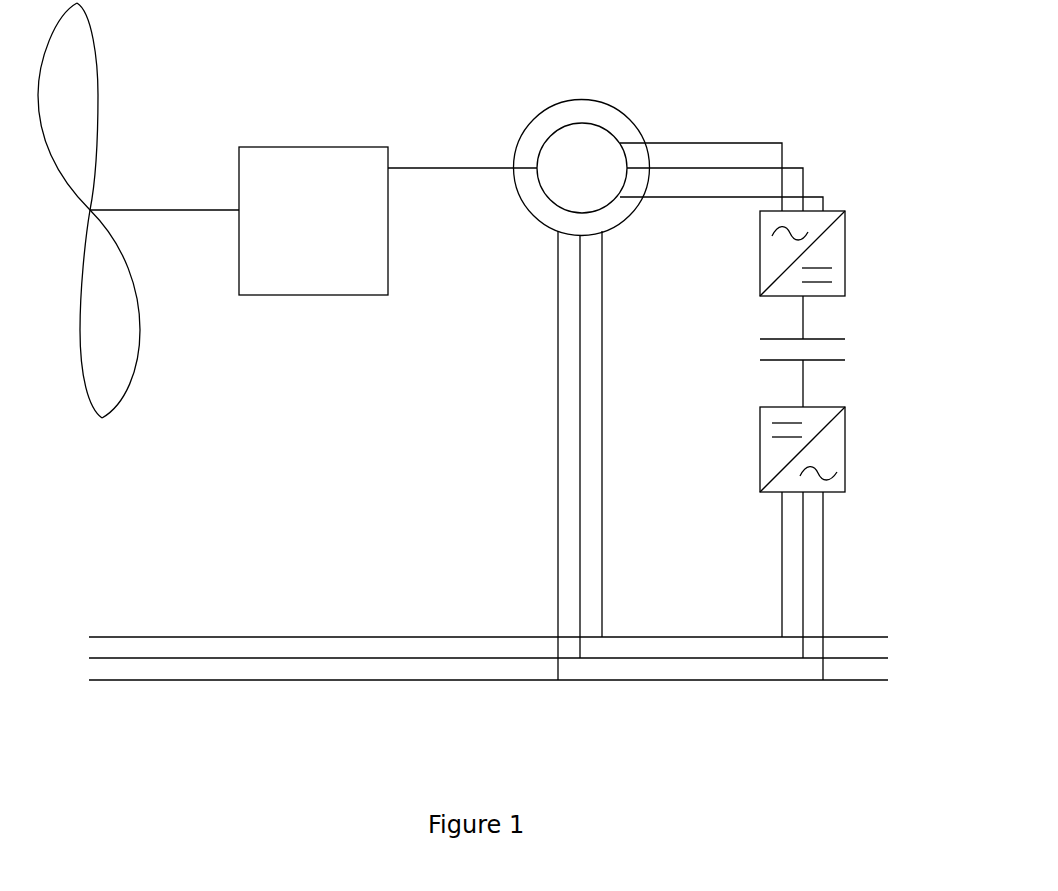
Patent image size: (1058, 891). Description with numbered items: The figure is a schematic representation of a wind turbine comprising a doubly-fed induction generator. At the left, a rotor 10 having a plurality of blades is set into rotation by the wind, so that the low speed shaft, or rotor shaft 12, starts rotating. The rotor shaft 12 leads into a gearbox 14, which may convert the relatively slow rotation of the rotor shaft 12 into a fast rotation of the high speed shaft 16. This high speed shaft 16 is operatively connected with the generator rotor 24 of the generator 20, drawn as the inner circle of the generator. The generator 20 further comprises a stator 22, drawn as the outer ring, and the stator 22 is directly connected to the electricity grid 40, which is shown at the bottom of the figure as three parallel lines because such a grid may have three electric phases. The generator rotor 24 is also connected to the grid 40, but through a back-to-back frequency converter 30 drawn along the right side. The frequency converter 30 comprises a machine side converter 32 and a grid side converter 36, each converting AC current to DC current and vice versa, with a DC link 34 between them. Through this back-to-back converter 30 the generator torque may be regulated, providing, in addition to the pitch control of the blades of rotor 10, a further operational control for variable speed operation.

The rotor 10 is at (115, 103).
The low speed shaft 12 is at (183, 210).
The gearbox 14 is at (312, 295).
The high speed shaft 16 is at (463, 168).
The generator 20 is at (573, 134).
The stator 22 is at (565, 100).
The generator rotor 24 is at (552, 137).
The back-to-back frequency converter 30 is at (733, 411).
The machine side converter 32 is at (760, 253).
The DC link 34 is at (782, 360).
The grid side converter 36 is at (760, 443).
The electricity grid 40 is at (375, 680).